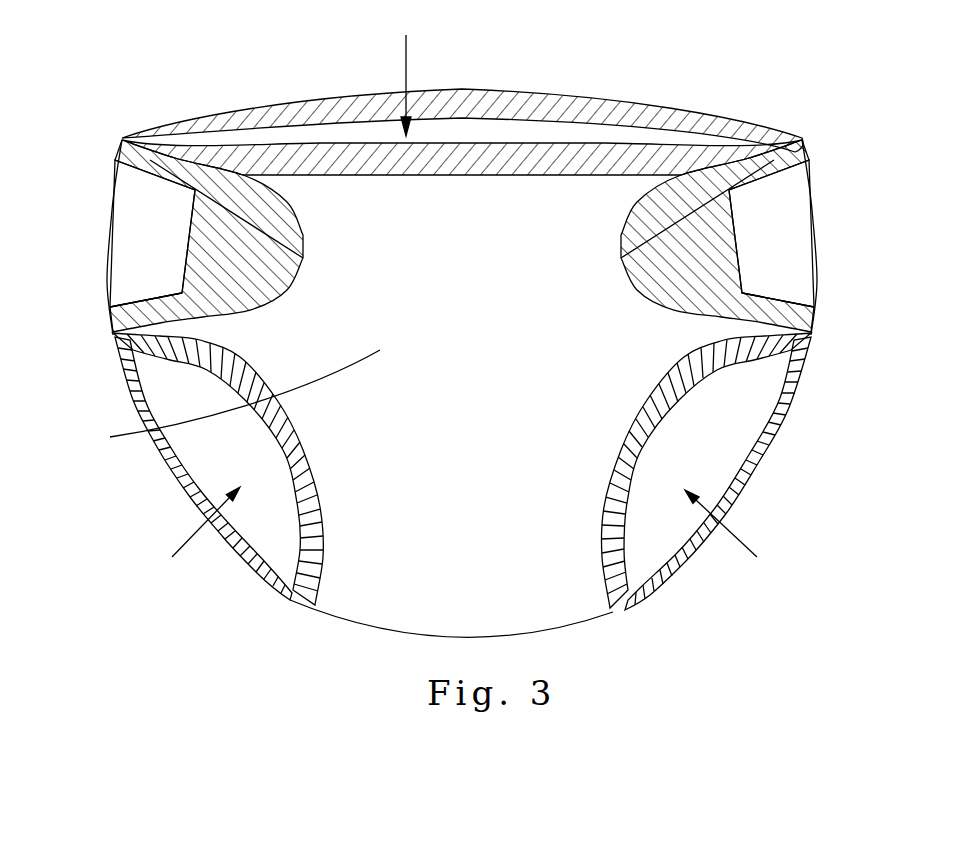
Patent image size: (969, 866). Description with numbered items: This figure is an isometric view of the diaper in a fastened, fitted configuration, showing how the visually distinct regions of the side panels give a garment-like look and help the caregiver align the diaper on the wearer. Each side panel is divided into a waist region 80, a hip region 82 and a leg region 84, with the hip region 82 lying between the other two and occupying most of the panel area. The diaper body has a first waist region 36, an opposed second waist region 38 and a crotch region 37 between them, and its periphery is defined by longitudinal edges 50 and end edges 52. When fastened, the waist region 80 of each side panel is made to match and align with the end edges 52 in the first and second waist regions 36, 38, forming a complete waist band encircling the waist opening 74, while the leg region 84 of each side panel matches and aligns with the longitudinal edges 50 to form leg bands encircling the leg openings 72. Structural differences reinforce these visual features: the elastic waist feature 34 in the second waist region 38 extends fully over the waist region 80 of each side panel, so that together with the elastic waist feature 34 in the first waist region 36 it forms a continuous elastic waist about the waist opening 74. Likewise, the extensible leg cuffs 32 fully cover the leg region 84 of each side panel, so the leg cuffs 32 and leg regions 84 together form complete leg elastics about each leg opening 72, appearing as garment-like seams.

The extensible leg cuffs 32 is at (217, 365).
The elastic waist feature 34 is at (243, 113).
The first waist region 36 is at (226, 401).
The crotch region 37 is at (427, 588).
The second waist region 38 is at (363, 140).
The longitudinal edges 50 is at (300, 610).
The end edges 52 is at (430, 137).
The leg openings 72 is at (461, 533).
The waist opening 74 is at (400, 70).
The waist region 80 is at (121, 141).
The hip region 82 is at (162, 252).
The leg region 84 is at (115, 302).